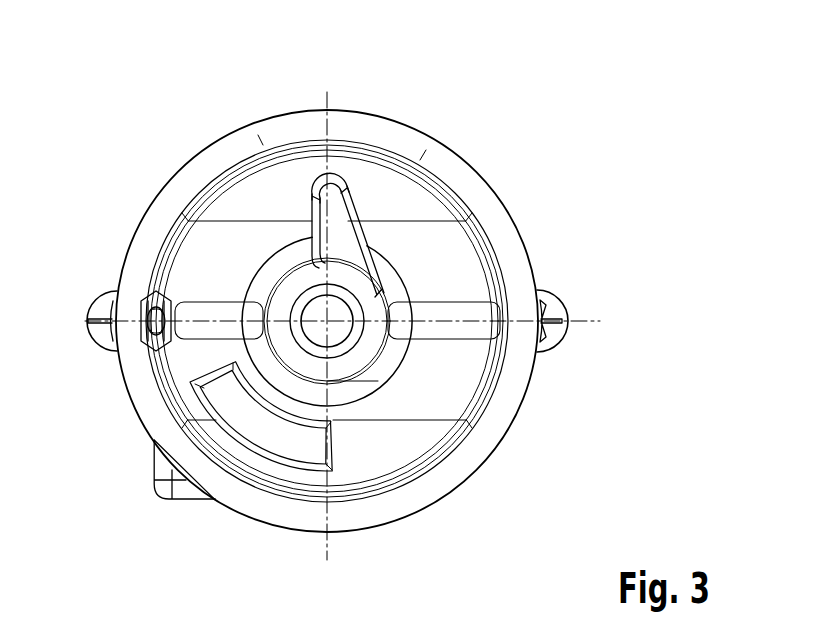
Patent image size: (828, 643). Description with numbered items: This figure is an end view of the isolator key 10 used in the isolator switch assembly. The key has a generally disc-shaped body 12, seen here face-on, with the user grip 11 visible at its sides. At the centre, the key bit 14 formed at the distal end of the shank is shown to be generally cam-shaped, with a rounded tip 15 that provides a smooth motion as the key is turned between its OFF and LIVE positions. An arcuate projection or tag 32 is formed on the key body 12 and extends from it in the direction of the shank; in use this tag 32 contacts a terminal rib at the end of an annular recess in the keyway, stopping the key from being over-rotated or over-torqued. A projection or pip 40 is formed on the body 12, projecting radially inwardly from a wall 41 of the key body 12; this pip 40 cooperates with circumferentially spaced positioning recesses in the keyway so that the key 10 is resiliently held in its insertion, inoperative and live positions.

The isolator key 10 is at (106, 171).
The user grip 11 is at (96, 304).
The disc-shaped body 12 is at (498, 218).
The key bit 14 is at (345, 220).
The rounded tip 15 is at (318, 184).
The arcuate tag 32 is at (284, 436).
The pip 40 is at (156, 328).
The wall 41 is at (475, 432).